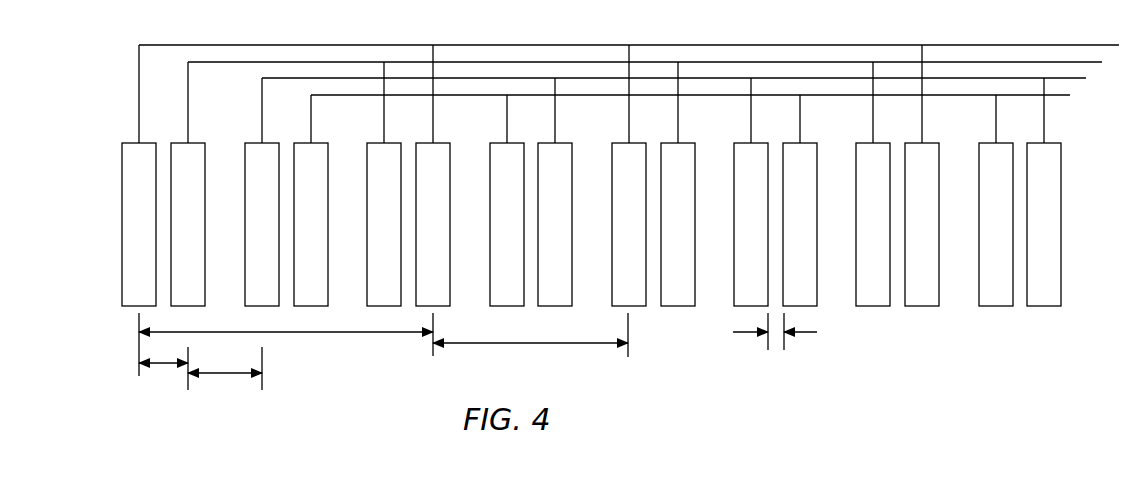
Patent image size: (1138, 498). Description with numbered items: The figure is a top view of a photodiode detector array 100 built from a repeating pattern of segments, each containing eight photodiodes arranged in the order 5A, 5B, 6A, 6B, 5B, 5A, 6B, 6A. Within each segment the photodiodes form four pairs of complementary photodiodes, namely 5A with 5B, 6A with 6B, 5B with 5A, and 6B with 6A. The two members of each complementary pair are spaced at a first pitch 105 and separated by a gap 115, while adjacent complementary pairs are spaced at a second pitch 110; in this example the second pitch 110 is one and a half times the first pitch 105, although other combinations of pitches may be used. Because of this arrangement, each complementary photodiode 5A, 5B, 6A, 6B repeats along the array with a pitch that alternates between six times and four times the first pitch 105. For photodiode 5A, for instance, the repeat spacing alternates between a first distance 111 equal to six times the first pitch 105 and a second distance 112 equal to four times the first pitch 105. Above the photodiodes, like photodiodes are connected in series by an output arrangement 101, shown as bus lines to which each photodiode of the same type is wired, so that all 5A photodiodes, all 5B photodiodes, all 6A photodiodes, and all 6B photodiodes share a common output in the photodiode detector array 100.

The photodiode detector array 100 is at (107, 147).
The output arrangement 101 is at (122, 62).
The photodiode 5A is at (530, 224).
The photodiode 5B is at (530, 224).
The photodiode 6A is at (653, 224).
The photodiode 6B is at (653, 224).
The first pitch 105 is at (165, 367).
The second pitch 110 is at (222, 376).
The first distance 111 is at (328, 335).
The second distance 112 is at (580, 345).
The gap 115 is at (775, 342).